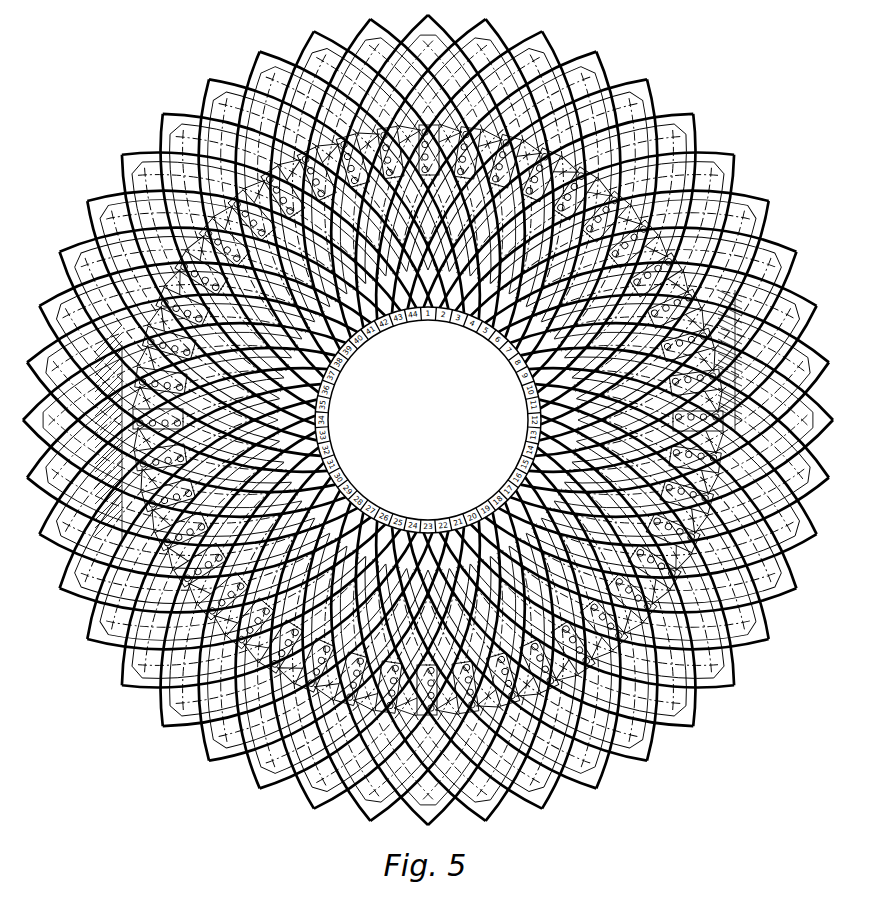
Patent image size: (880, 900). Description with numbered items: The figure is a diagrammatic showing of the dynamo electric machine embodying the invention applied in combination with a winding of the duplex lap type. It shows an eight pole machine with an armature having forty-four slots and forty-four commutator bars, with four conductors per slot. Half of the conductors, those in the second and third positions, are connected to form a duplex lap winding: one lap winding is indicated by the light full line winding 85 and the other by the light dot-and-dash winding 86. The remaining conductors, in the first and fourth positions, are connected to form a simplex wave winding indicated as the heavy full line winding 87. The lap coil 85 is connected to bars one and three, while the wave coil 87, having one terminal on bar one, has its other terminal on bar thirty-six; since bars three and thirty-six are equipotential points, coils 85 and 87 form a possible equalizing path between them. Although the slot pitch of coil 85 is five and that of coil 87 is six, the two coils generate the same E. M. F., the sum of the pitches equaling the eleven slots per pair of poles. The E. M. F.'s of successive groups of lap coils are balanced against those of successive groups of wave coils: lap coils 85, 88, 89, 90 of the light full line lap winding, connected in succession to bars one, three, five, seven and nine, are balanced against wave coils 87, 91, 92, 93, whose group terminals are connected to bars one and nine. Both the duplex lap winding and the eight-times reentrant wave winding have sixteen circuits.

The lap coil 85 is at (541, 41).
The dot-and-dash lap winding 86 is at (593, 62).
The wave coil 87 is at (232, 85).
The lap coil 88 is at (648, 89).
The lap coil 89 is at (733, 164).
The lap coil 90 is at (786, 246).
The wave coil 91 is at (56, 540).
The wave coil 92 is at (441, 812).
The wave coil 93 is at (806, 530).